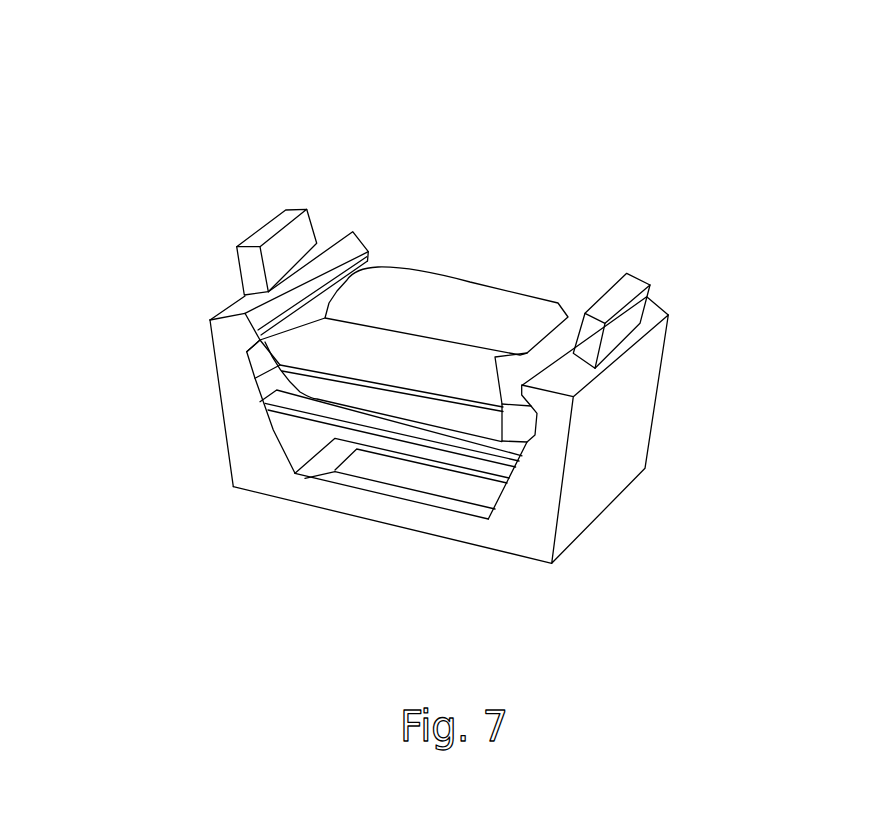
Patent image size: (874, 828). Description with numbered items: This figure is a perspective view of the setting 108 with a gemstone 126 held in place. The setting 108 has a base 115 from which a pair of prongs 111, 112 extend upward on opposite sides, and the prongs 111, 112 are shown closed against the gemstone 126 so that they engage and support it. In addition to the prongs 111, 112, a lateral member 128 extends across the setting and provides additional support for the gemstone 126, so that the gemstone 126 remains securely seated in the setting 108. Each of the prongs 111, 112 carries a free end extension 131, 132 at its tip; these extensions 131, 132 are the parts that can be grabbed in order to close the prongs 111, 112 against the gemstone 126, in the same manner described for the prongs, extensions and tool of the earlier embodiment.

The setting 108 is at (337, 93).
The prong 111 is at (207, 337).
The prong 112 is at (665, 362).
The base 115 is at (325, 503).
The gemstone 126 is at (463, 298).
The lateral member 128 is at (293, 417).
The free end extension 131 is at (267, 225).
The free end extension 132 is at (637, 278).